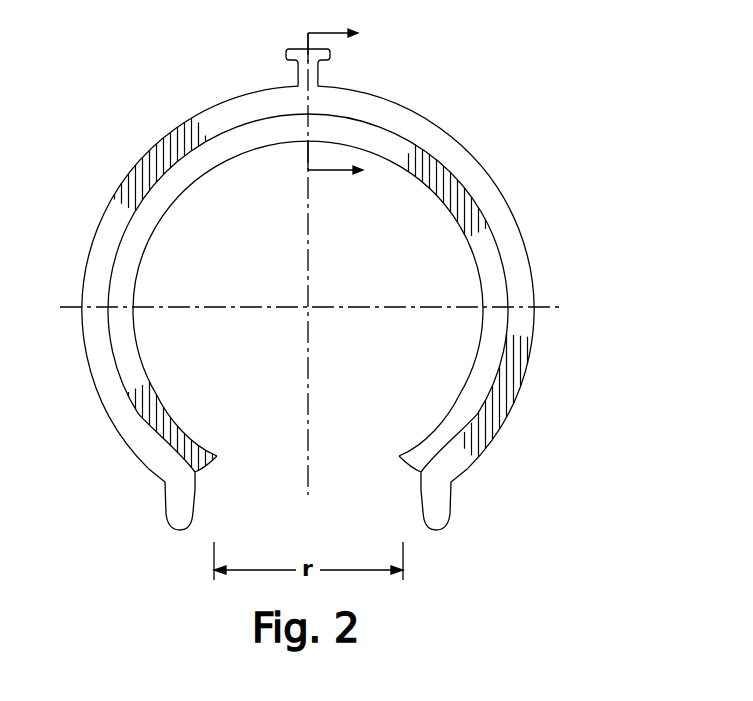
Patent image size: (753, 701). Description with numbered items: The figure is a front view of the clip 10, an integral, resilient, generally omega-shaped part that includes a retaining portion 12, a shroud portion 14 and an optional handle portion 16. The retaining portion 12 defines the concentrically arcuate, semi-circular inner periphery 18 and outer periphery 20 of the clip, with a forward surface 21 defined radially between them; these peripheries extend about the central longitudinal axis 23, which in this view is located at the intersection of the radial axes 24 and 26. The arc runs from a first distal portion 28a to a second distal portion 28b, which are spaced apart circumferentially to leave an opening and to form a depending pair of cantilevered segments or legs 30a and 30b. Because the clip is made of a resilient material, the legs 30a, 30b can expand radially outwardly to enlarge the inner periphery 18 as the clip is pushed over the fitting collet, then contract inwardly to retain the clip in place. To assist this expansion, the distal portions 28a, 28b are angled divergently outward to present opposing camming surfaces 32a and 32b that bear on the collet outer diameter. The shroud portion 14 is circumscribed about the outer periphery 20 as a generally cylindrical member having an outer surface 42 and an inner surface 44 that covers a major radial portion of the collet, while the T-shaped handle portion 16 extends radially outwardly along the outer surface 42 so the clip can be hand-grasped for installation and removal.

The clip 10 is at (603, 97).
The retaining portion 12 is at (467, 380).
The shroud portion 14 is at (512, 360).
The handle portion 16 is at (331, 52).
The inner periphery 18 is at (192, 182).
The outer periphery 20 is at (90, 238).
The forward surface 21 is at (495, 272).
The central longitudinal axis 23 is at (307, 307).
The radial axis 24 is at (308, 232).
The radial axis 26 is at (197, 307).
The first distal portion 28a is at (180, 530).
The second distal portion 28b is at (436, 530).
The cantilevered segment 30a is at (125, 408).
The cantilevered segment 30b is at (500, 423).
The camming surface 32a is at (196, 510).
The camming surface 32b is at (420, 513).
The outer surface 42 is at (523, 237).
The inner surface 44 is at (440, 190).